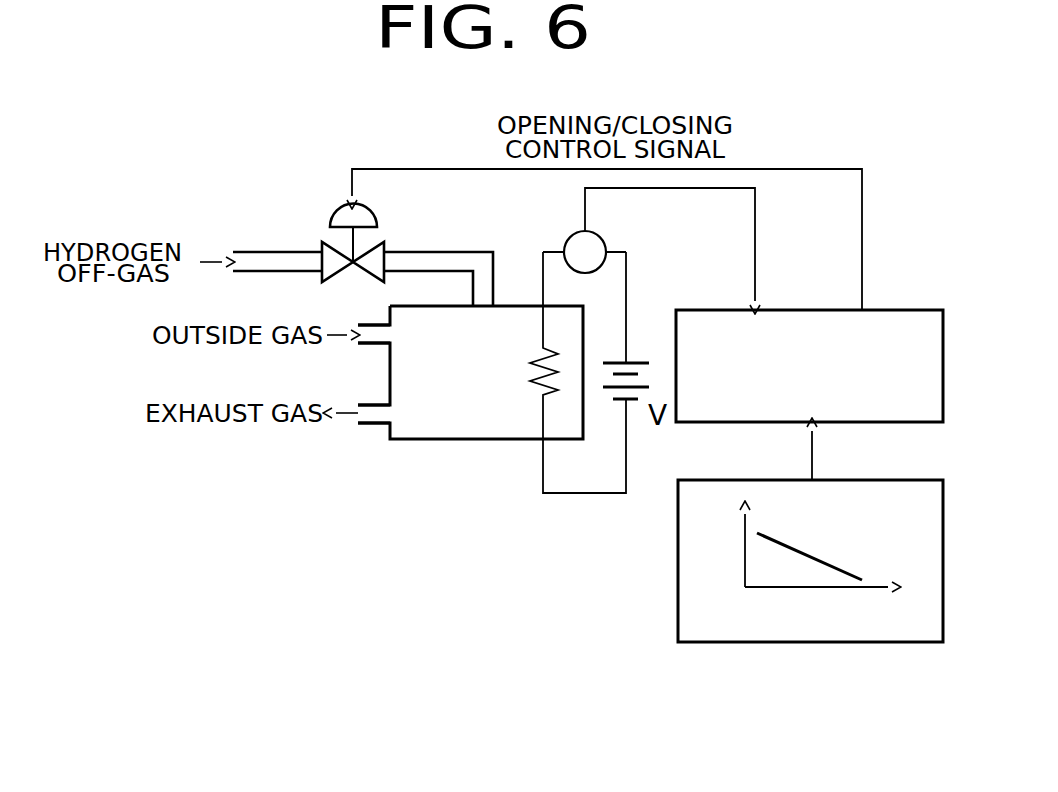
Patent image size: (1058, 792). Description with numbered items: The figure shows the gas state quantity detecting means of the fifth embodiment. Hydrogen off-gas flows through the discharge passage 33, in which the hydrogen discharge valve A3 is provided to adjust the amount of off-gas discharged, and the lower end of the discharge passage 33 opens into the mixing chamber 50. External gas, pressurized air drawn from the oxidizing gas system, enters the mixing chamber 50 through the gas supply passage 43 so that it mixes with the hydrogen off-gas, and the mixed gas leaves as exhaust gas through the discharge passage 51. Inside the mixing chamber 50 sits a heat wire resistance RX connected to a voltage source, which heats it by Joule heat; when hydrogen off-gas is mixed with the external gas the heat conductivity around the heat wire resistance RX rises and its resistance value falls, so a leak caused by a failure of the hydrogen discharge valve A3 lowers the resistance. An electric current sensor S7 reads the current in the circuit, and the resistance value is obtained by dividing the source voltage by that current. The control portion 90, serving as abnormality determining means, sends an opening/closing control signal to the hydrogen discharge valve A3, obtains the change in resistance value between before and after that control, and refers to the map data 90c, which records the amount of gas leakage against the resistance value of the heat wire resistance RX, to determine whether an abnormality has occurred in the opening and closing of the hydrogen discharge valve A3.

The discharge passage 33 is at (357, 251).
The hydrogen discharge valve A3 is at (377, 217).
The gas supply passage 43 is at (378, 323).
The discharge passage 51 is at (378, 403).
The mixing chamber 50 is at (446, 440).
The heat wire resistance RX is at (520, 372).
The electric current sensor S7 is at (567, 236).
The control portion (abnormality determining means) 90 is at (907, 310).
The map data 90c is at (870, 645).